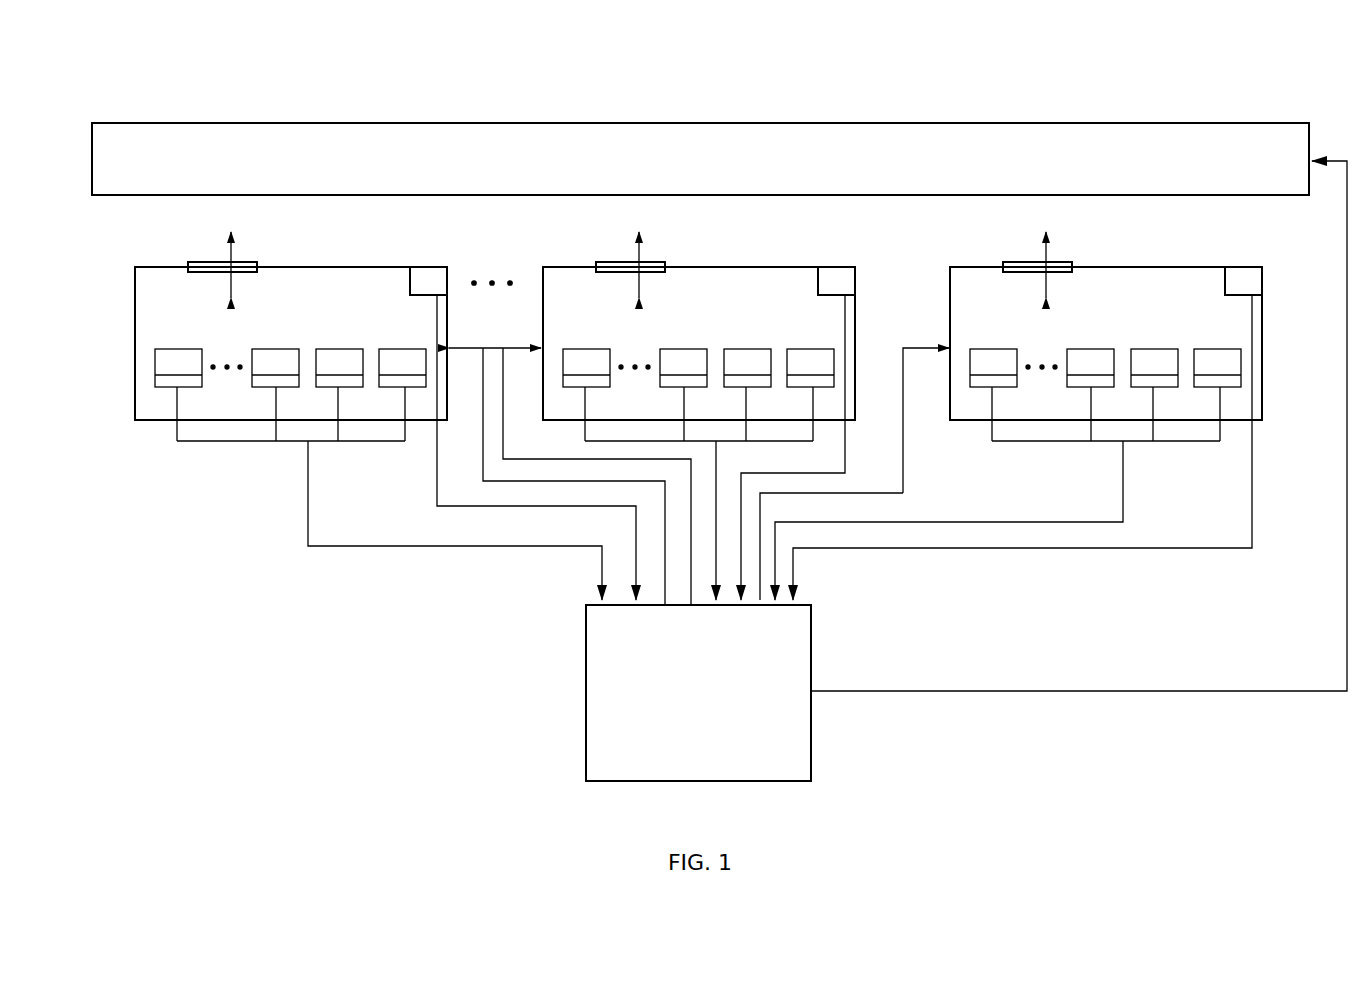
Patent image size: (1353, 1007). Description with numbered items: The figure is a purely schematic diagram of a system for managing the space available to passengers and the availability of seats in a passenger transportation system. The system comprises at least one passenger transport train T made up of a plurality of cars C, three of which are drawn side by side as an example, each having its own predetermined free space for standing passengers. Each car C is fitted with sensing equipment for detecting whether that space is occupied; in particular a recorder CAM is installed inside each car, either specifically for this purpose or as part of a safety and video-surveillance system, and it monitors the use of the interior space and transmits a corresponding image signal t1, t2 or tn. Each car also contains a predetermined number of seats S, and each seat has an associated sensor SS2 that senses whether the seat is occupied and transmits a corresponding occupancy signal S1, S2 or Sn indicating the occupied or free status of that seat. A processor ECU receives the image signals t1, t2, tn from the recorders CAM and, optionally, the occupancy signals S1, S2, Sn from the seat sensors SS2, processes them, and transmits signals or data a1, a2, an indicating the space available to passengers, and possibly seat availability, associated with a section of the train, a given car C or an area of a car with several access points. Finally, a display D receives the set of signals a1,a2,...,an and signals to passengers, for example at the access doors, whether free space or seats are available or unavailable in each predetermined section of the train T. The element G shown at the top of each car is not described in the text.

The display D is at (190, 143).
The car C is at (160, 295).
The recorder CAM is at (422, 276).
The gate / movable element G is at (245, 258).
The seat S is at (185, 360).
The sensor SS2 is at (160, 381).
The occupancy signal sn Sn is at (178, 433).
The occupancy signal s2 S2 is at (340, 427).
The occupancy signal s1 S1 is at (407, 427).
The passenger transport train T is at (124, 403).
The signal a2 is at (503, 366).
The signal an is at (480, 430).
The signal a1 is at (905, 475).
The image signal tn is at (437, 507).
The image signal t2 is at (845, 450).
The image signal t1 is at (1194, 550).
The processor ECU is at (600, 697).
The signals or data a1, a2, ..., an a1,a2,...,an is at (972, 695).